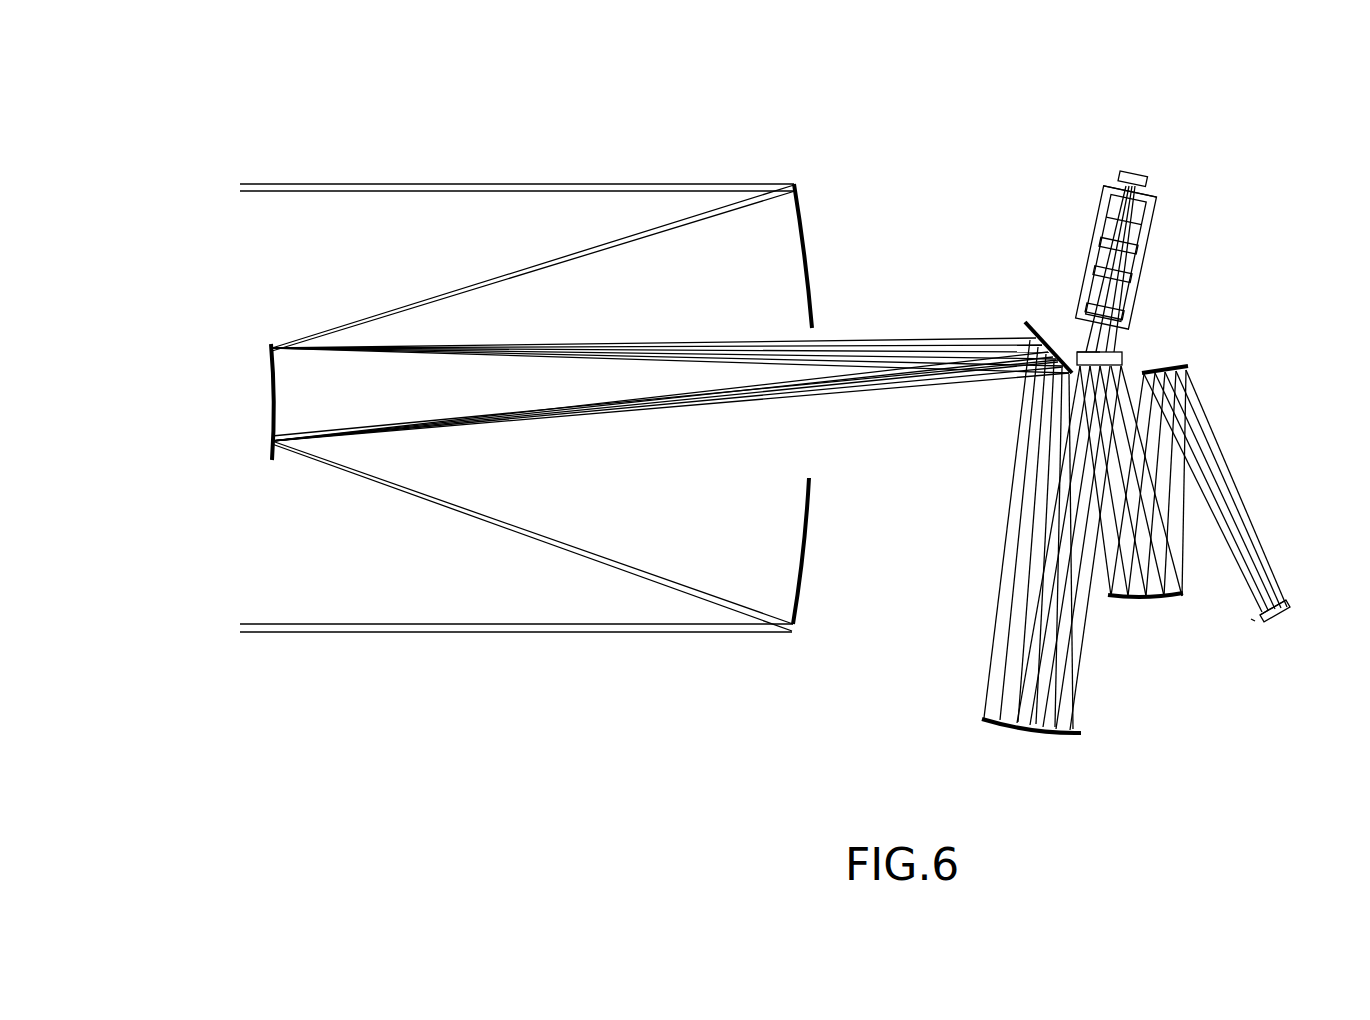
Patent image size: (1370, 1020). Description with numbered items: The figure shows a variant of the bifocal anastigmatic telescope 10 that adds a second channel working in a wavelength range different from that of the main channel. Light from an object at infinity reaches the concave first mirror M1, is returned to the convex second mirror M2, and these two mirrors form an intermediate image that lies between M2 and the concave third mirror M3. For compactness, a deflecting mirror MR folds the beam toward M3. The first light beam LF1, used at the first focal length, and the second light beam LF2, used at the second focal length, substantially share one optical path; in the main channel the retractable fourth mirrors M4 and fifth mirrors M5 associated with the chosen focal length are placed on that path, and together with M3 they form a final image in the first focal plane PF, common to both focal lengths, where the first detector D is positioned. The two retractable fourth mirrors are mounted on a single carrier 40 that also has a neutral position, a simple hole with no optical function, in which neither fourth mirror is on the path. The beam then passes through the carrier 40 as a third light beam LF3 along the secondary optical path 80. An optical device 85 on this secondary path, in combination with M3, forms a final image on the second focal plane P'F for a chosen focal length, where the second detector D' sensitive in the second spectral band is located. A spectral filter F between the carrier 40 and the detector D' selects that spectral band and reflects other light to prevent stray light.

The bifocal anastigmatic telescope 10 is at (697, 147).
The first mirror M1 is at (811, 573).
The second mirror M2 is at (270, 401).
The third mirror M3 is at (1030, 735).
The retractable fourth mirrors M4 is at (1225, 462).
The retractable fifth mirrors M5 is at (1153, 598).
The deflecting mirror MR is at (1043, 317).
The first light beam LF1 is at (886, 393).
The second light beam LF2 is at (895, 335).
The third light beam LF3 is at (1147, 333).
The secondary optical path 80 is at (1204, 263).
The optical device 85 is at (1100, 220).
The carrier 40 is at (1125, 357).
The spectral filter F is at (1076, 348).
The first detector D is at (1218, 533).
The second detector D' is at (1137, 121).
The first focal plane PF is at (1288, 598).
The second focal plane P'F is at (1178, 145).